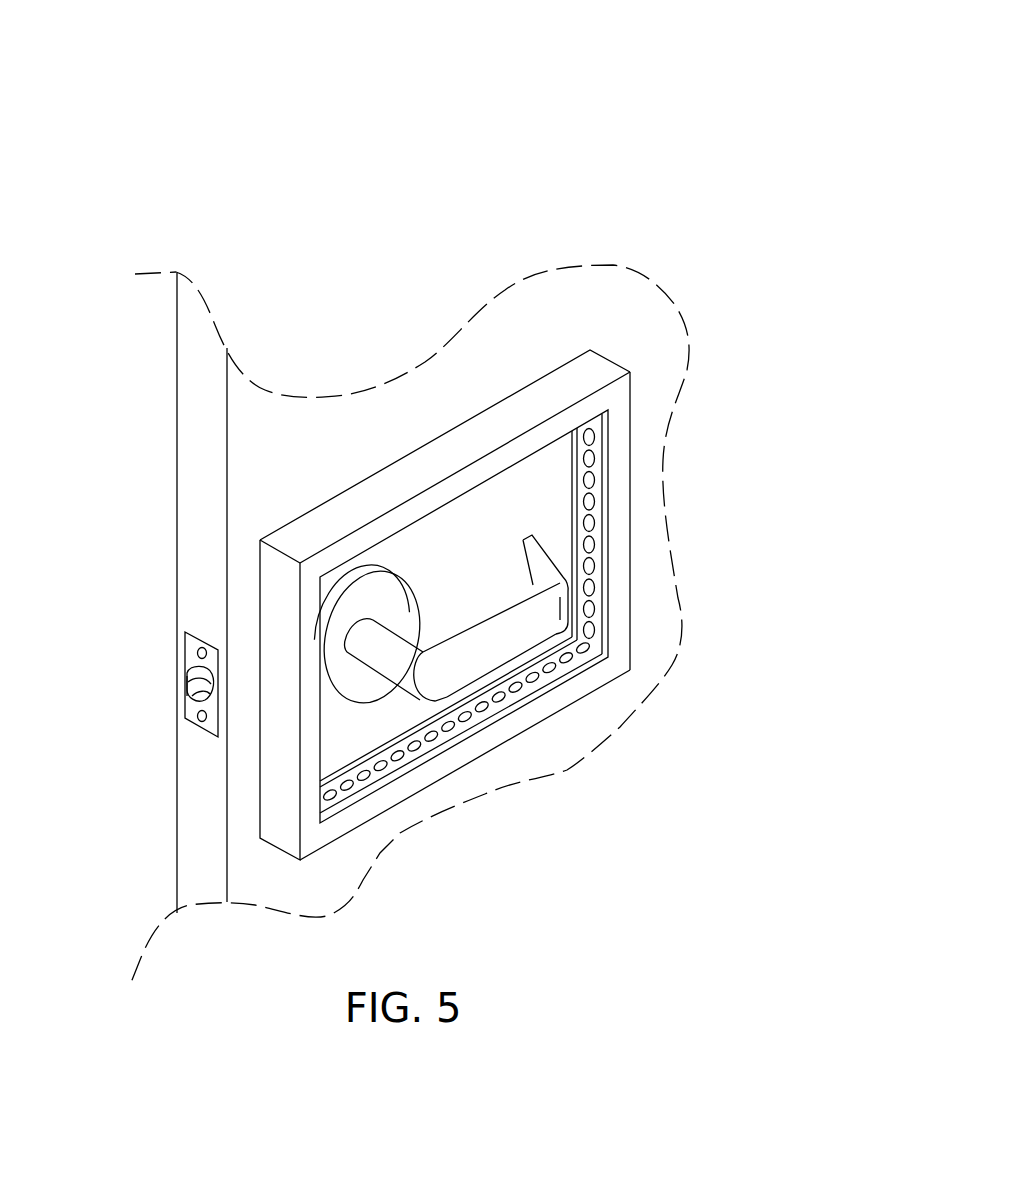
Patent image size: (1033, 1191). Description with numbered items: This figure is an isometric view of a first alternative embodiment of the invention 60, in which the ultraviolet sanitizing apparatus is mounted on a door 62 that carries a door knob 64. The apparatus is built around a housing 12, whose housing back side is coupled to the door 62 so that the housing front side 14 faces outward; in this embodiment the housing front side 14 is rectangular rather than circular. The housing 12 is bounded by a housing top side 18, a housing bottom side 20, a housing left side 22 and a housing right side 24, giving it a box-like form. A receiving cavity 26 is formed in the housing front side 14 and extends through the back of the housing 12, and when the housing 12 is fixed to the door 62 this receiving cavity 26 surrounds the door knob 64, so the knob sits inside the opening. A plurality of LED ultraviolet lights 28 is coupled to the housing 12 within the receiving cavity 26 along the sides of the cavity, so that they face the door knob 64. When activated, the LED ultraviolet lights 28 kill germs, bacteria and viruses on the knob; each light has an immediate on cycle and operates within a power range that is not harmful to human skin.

The first alternative embodiment of the invention 60 is at (708, 114).
The door 62 is at (210, 518).
The housing 12 is at (483, 410).
The housing left side 22 is at (276, 750).
The housing top side 18 is at (333, 517).
The housing right side 24 is at (632, 435).
The housing bottom side 20 is at (387, 813).
The housing front side 14 is at (593, 678).
The receiving cavity 26 is at (527, 487).
The LED ultraviolet lights 28 is at (595, 546).
The door knob 64 is at (438, 673).